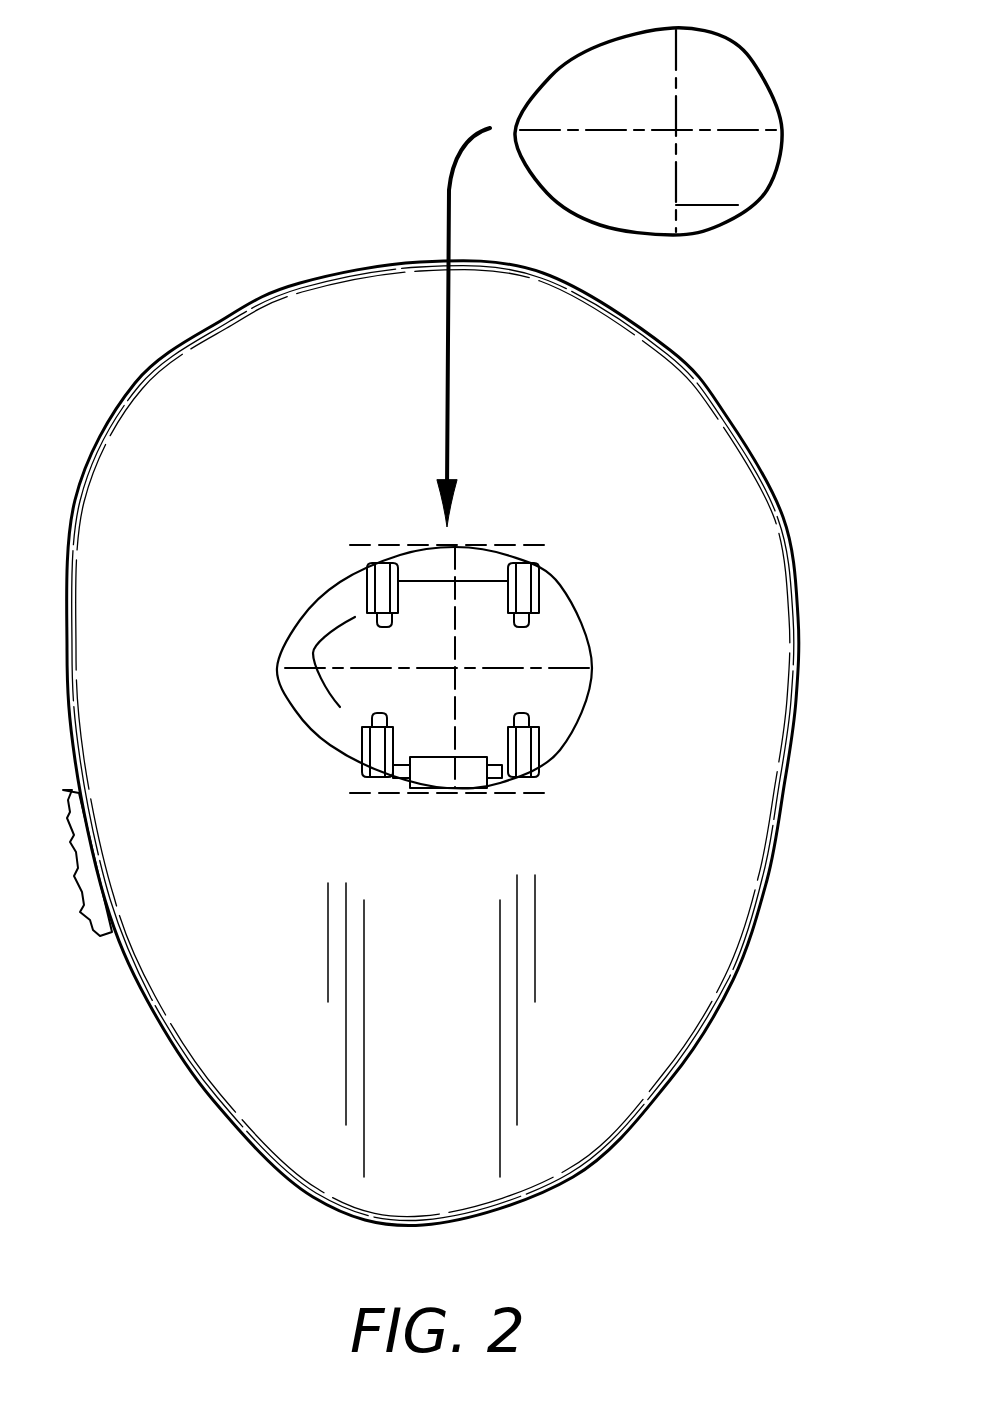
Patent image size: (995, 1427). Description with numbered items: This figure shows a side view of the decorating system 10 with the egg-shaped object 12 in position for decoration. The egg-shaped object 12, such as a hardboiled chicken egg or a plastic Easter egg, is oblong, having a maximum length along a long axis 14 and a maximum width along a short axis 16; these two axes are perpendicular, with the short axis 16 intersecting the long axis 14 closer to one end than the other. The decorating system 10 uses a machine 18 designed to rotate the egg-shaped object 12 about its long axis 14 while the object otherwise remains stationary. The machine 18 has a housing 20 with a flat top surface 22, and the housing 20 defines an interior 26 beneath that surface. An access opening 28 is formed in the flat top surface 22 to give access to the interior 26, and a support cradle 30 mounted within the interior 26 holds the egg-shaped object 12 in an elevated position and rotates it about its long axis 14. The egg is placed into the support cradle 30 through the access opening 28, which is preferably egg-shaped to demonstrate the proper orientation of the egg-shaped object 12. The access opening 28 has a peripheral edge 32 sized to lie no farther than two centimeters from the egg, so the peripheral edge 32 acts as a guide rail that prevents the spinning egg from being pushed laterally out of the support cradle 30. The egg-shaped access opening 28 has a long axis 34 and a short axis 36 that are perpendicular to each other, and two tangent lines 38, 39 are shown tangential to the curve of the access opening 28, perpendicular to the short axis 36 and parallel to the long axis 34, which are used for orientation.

The decorating system 10 is at (802, 425).
The egg-shaped object 12 is at (550, 72).
The long axis 14 is at (758, 128).
The short axis 16 is at (733, 210).
The machine 18 is at (773, 862).
The housing 20 is at (773, 622).
The flat top surface 22 is at (752, 793).
The interior 26 is at (348, 607).
The access opening 28 is at (557, 582).
The support cradle 30 is at (313, 653).
The peripheral edge 32 is at (548, 725).
The long axis 34 is at (455, 647).
The short axis 36 is at (550, 668).
The tangent line 38 is at (398, 543).
The tangent line 39 is at (398, 792).